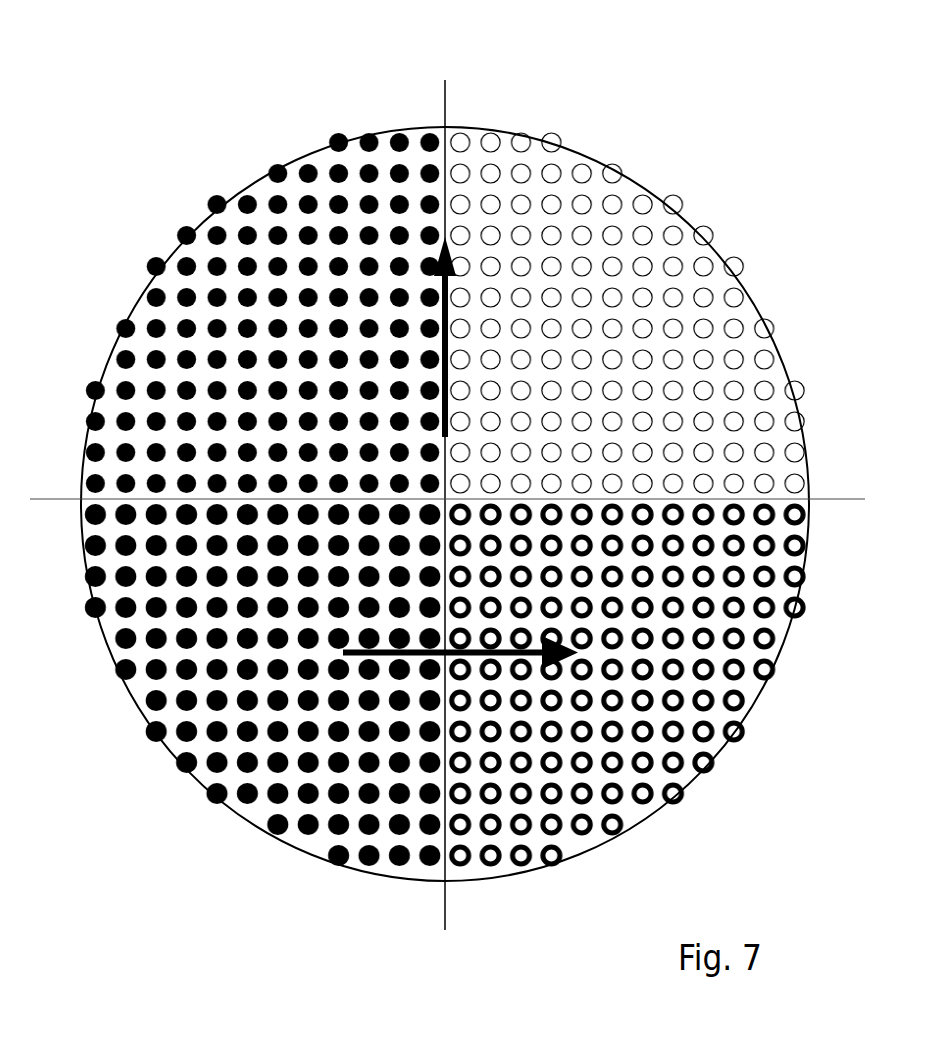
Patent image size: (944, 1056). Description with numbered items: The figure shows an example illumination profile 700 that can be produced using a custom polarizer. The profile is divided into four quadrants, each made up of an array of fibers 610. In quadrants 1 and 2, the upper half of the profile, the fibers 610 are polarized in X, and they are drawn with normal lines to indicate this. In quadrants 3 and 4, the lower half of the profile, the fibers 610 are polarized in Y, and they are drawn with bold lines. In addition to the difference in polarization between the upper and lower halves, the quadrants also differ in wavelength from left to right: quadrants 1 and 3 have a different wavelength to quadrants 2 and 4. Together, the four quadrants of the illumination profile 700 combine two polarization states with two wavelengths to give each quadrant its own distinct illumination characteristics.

The illumination profile 700 is at (447, 481).
The fibers 610 is at (445, 474).
The quadrant 1 is at (262, 313).
The quadrant 2 is at (627, 313).
The quadrant 3 is at (262, 685).
The quadrant 4 is at (627, 685).